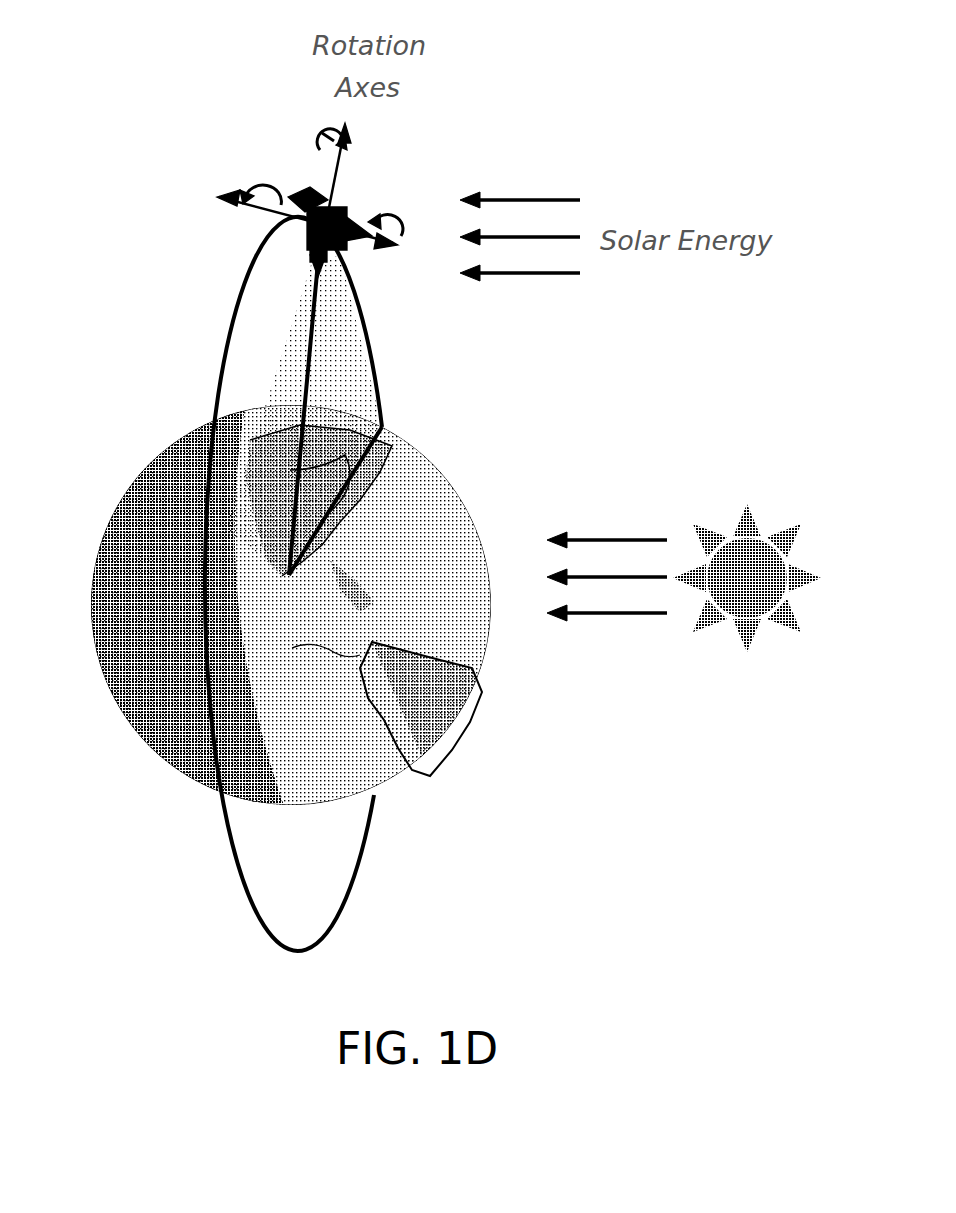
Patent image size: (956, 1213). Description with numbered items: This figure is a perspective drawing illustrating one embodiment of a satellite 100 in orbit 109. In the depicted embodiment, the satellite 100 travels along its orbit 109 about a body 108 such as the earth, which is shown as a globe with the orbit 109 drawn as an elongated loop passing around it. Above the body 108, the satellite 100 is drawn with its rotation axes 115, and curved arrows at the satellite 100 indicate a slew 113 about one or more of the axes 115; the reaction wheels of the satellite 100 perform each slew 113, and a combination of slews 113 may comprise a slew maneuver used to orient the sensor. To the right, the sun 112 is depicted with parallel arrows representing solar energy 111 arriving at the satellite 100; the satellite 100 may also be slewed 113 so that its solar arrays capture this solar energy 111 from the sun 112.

The satellite 100 is at (340, 263).
The body 108 is at (470, 698).
The orbit 109 is at (382, 810).
The solar energy 111 is at (513, 200).
The sun 112 is at (753, 540).
The slew 113 is at (247, 177).
The axes 115 is at (337, 163).